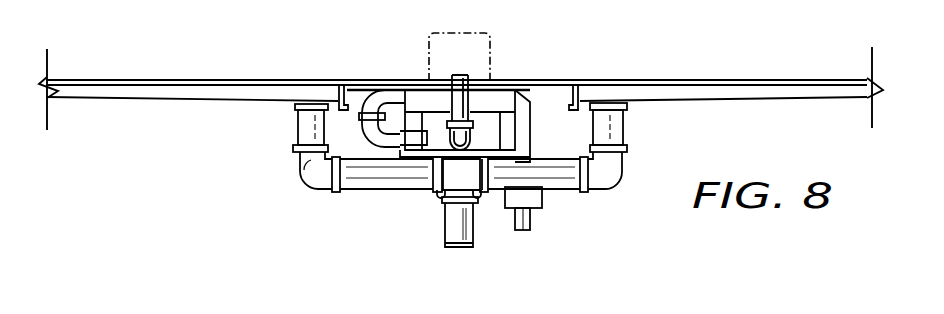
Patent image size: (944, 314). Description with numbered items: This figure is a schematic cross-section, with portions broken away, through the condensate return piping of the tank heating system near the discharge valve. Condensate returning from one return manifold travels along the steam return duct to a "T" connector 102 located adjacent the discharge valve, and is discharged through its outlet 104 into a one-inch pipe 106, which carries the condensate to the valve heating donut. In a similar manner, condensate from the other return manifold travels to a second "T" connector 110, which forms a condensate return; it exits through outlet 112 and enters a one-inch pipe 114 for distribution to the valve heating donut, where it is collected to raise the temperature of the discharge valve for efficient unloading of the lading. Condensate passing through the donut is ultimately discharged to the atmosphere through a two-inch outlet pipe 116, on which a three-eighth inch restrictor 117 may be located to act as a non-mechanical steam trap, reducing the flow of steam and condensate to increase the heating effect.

The "T" connector 102 is at (207, 92).
The outlet 104 is at (293, 108).
The one-inch pipe 106 is at (380, 180).
The second "T" connector 110 is at (702, 90).
The outlet 112 is at (627, 108).
The one-inch pipe 114 is at (565, 185).
The outlet pipe 116 is at (508, 190).
The restrictor 117 is at (535, 213).